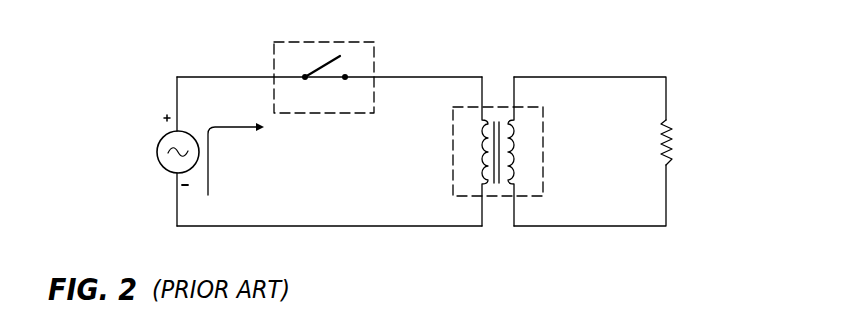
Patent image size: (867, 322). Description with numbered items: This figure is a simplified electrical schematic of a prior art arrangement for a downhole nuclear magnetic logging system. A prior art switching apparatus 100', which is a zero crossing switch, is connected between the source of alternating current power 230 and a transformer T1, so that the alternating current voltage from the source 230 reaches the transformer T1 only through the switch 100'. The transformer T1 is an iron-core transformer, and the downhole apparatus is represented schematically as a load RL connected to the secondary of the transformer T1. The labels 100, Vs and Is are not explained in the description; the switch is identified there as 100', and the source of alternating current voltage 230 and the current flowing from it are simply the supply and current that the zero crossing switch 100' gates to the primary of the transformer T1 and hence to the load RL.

The prior art switching apparatus 100' is at (498, 71).
The zero crossing switch 100 is at (498, 71).
The source of alternating current power 230 is at (172, 173).
The source voltage Vs is at (129, 150).
The source current Is is at (239, 159).
The transformer T1 is at (498, 151).
The load RL is at (686, 142).